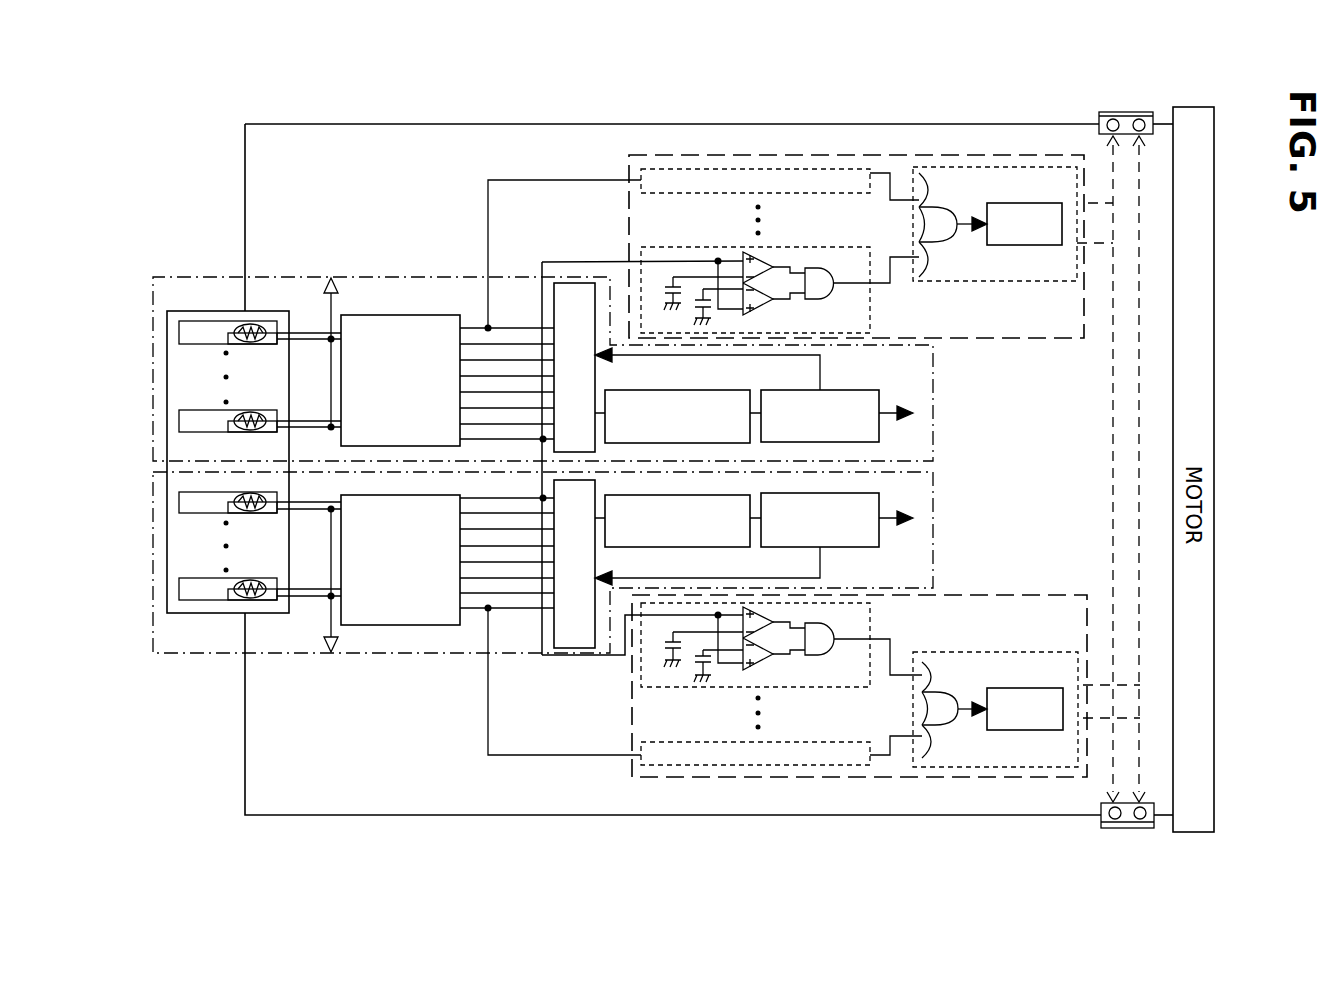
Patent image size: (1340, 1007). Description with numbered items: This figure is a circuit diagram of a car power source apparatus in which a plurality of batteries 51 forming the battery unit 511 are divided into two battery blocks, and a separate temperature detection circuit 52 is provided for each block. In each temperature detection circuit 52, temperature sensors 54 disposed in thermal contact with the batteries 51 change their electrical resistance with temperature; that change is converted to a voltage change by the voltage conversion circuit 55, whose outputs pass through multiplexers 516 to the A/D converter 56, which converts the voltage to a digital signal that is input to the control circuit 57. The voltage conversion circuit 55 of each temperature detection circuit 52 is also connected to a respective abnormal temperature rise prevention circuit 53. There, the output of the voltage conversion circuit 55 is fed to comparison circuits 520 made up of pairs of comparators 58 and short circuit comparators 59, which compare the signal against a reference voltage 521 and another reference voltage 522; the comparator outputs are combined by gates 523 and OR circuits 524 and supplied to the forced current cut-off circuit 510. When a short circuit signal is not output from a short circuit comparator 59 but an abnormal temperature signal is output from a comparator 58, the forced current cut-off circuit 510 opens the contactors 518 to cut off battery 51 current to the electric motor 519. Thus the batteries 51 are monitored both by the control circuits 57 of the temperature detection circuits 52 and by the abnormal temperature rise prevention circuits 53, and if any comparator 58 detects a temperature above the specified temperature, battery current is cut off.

The battery 51 is at (187, 333).
The battery unit 511 is at (222, 310).
The temperature detection circuit 52 is at (420, 277).
The multiplexer 516 is at (575, 282).
The abnormal temperature rise prevention circuit 53 is at (880, 155).
The temperature sensor 54 is at (270, 321).
The voltage conversion circuit 55 is at (367, 313).
The A/D converter 56 is at (652, 390).
The control circuit 57 is at (830, 442).
The comparator 58 is at (765, 314).
The short circuit comparator 59 is at (743, 252).
The forced current cut-off circuit 510 is at (1043, 283).
The contactor 518 is at (1099, 118).
The electric motor 519 is at (1113, 508).
The comparison circuit 520 is at (878, 305).
The reference voltage 521 is at (703, 300).
The reference voltage 522 is at (673, 287).
The AND gate 523 is at (833, 283).
The OR circuit 524 is at (948, 280).